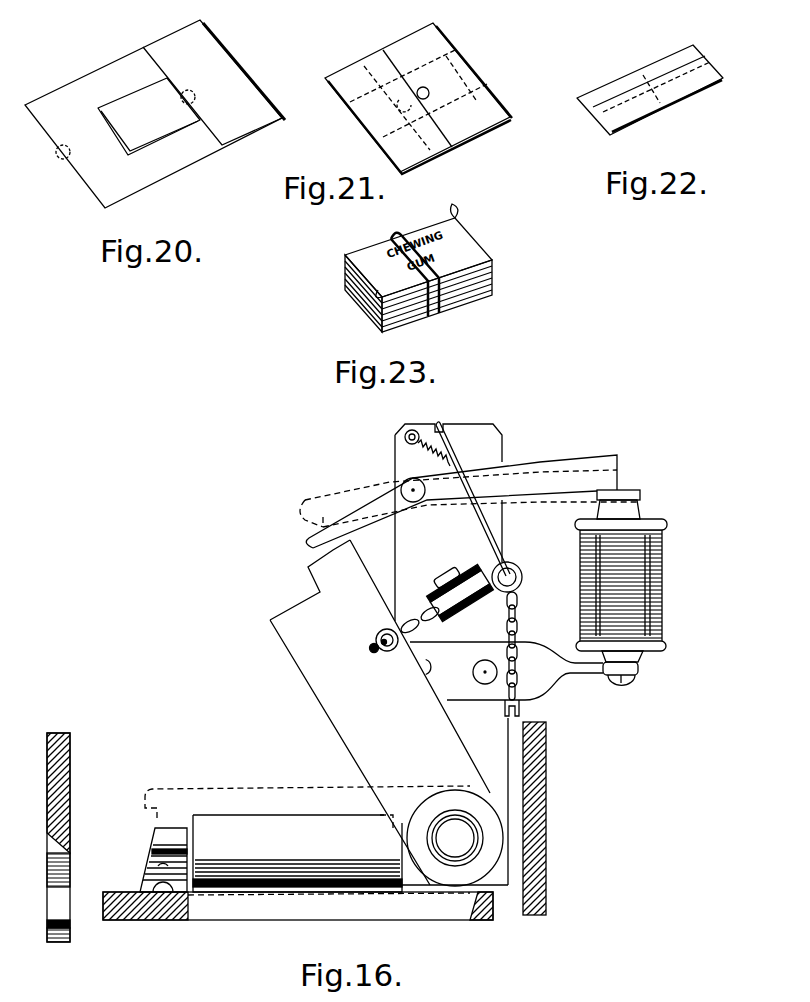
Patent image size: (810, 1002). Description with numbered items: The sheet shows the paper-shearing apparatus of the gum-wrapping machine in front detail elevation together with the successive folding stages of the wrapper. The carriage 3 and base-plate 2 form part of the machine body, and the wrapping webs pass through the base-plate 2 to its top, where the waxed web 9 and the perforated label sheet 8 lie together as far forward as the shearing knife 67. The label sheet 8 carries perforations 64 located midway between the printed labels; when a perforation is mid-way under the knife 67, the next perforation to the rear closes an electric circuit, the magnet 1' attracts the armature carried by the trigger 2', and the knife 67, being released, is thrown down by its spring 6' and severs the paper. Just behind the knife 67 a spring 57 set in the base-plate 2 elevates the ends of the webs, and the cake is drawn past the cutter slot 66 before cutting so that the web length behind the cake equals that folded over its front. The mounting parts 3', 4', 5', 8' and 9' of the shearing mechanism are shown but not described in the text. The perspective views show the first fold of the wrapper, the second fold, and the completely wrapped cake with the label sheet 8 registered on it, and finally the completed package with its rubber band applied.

In FIG. 20, the waxed web 9 is at (155, 114).
In FIG. 20, the label sheet 8 is at (212, 96).
In FIG. 21, the label sheet 8 is at (418, 98).
In FIG. 22, the label sheet 8 is at (650, 90).
In FIG. 16, the label sheet 8 is at (297, 853).
In FIG. 20, the perforations 64 is at (190, 93).
In FIG. 21, the perforations 64 is at (427, 88).
In FIG. 16, the magnet 1' is at (634, 592).
In FIG. 16, the trigger 2' is at (470, 501).
In FIG. 16, the pivot pin 3' is at (415, 503).
In FIG. 16, the spring anchor pin 4' is at (424, 452).
In FIG. 16, the chain 5' is at (527, 654).
In FIG. 16, the knife spring 6' is at (455, 838).
In FIG. 16, the connecting rod 8' is at (486, 507).
In FIG. 16, the wheel hub 9' is at (455, 838).
In FIG. 16, the shearing knife 67 is at (436, 712).
In FIG. 16, the spring 57 is at (282, 893).
In FIG. 16, the cutter slot 66 is at (330, 893).
In FIG. 16, the carriage 3 is at (298, 832).
In FIG. 16, the base-plate 2 is at (298, 923).